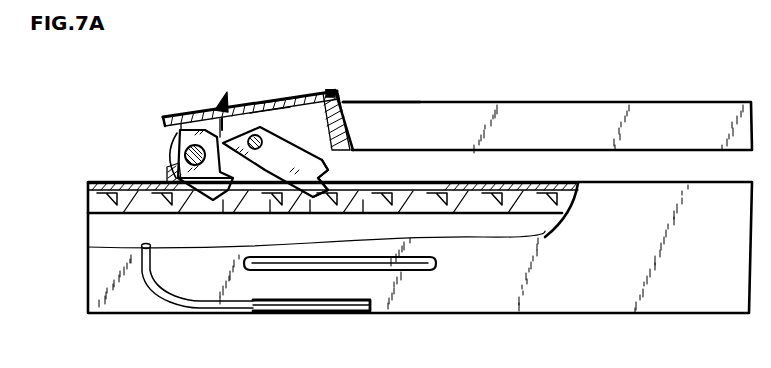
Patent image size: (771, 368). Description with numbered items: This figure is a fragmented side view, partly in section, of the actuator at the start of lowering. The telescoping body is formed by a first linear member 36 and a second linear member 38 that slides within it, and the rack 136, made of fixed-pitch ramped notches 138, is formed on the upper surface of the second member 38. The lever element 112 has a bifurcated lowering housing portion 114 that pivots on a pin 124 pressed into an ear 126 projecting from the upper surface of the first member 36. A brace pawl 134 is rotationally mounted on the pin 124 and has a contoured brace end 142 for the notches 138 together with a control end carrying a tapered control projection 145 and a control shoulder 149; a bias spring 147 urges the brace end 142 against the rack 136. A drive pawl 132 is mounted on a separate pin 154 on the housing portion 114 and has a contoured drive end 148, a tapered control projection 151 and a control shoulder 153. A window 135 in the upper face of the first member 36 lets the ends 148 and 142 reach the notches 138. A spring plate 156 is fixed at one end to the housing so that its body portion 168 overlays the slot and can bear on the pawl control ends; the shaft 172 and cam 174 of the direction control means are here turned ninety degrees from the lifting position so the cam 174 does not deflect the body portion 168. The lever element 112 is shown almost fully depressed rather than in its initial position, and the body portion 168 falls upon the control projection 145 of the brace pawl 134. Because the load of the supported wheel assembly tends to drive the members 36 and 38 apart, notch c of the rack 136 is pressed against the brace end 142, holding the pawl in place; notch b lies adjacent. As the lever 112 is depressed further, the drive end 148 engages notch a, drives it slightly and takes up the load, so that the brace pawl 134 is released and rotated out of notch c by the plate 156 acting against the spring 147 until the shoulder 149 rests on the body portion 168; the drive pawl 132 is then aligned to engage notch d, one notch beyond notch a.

The lever element 112 is at (571, 101).
The lowering housing portion 114 is at (344, 101).
The first linear member 36 is at (628, 298).
The second linear member 38 is at (560, 201).
The window 135 is at (437, 184).
The rack 136 is at (427, 183).
The ramped notches 138 is at (100, 196).
The ear 126 is at (225, 92).
The control shoulder 149 is at (200, 113).
The plate body portion 168 is at (283, 100).
The control shoulder 153 is at (267, 107).
The tapered control projection 151 is at (227, 130).
The spring plate 156 is at (177, 117).
The shaft 172 is at (327, 91).
The cam 174 is at (316, 94).
The drive pawl 132 is at (355, 122).
The pin 124 is at (181, 138).
The brace pawl 134 is at (186, 153).
The brace end 142 is at (198, 200).
The tapered control projection 145 is at (177, 133).
The bias spring 147 is at (170, 171).
The pin 154 is at (265, 137).
The drive end 148 is at (333, 181).
The notch a is at (310, 214).
The notch b is at (270, 213).
The notch c is at (222, 213).
The notch d is at (364, 214).